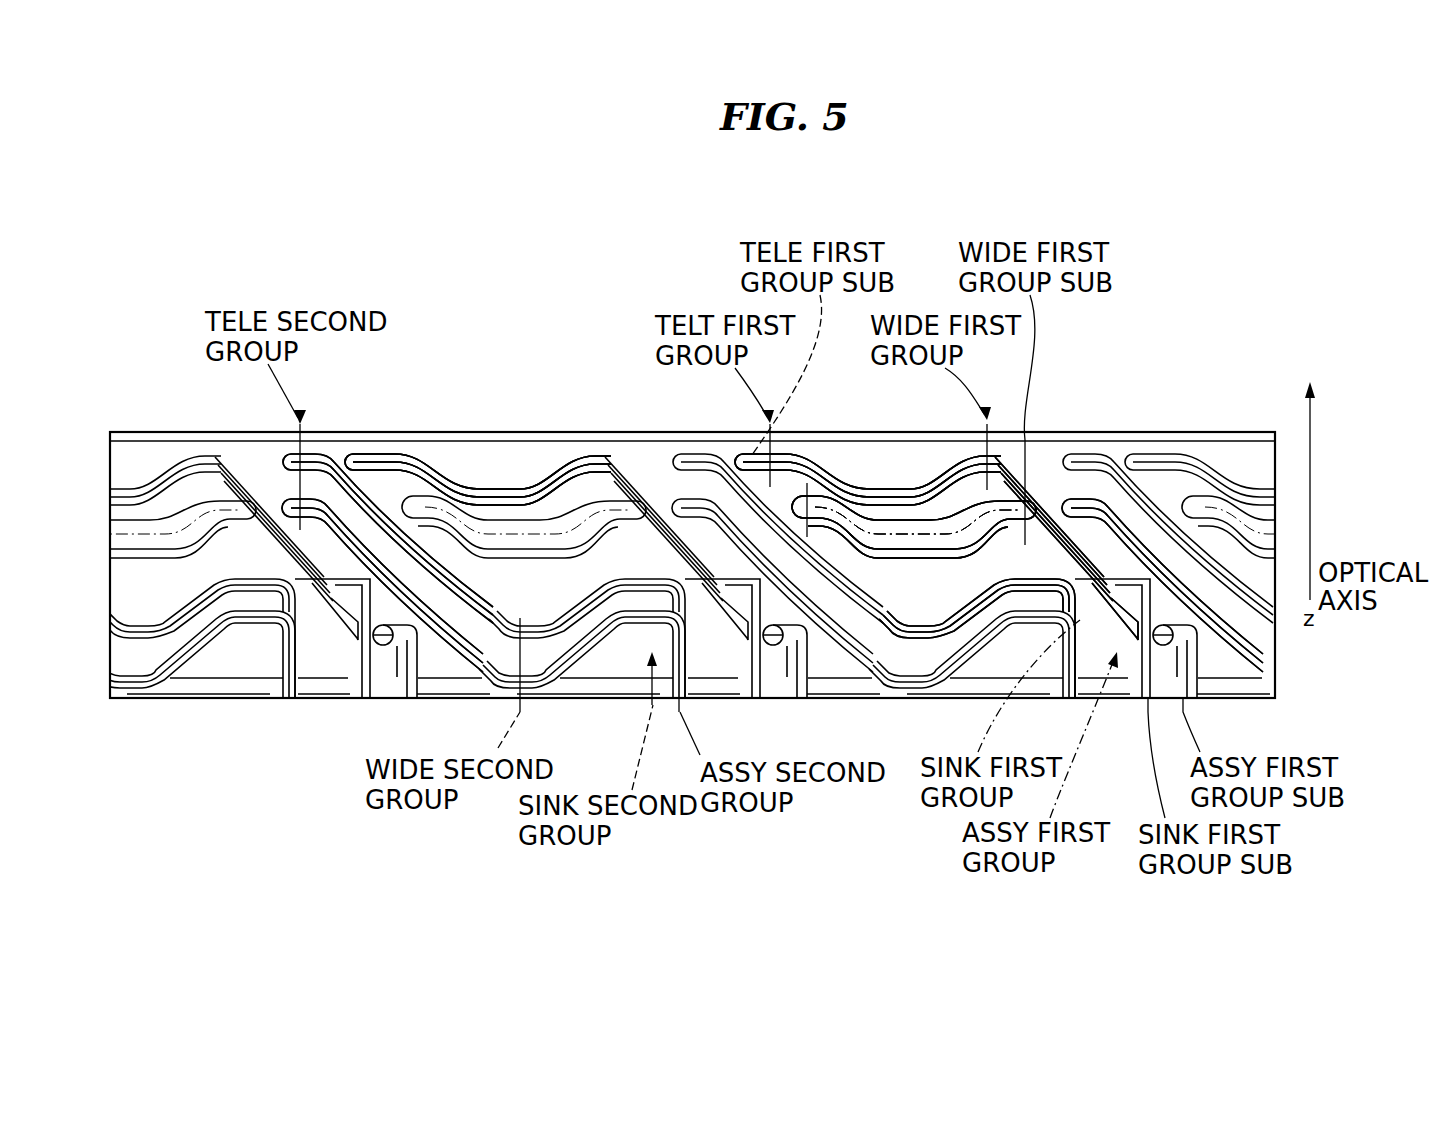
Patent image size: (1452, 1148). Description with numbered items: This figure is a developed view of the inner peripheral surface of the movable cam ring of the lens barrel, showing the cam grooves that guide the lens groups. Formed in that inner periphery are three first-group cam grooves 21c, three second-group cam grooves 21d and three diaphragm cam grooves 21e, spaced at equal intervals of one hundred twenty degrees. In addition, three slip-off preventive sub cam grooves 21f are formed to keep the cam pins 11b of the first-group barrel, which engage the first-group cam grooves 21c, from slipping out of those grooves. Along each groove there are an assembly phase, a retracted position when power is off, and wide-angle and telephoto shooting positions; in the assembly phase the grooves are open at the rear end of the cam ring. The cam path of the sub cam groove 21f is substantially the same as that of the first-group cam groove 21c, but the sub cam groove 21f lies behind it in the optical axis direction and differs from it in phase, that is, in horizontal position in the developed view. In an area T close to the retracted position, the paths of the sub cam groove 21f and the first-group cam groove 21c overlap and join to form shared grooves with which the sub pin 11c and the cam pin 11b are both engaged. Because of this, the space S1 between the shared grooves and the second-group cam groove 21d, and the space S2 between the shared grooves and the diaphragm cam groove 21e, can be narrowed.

The first-group cam groove 21c is at (899, 499).
The second-group cam groove 21d is at (328, 516).
The diaphragm cam groove 21e is at (372, 508).
The slip-off preventive sub cam groove 21f is at (945, 548).
The cam pin 11b is at (598, 462).
The sub pin 11c is at (568, 462).
The space S1 is at (1090, 543).
The space S2 is at (925, 605).
The area T is at (1083, 587).